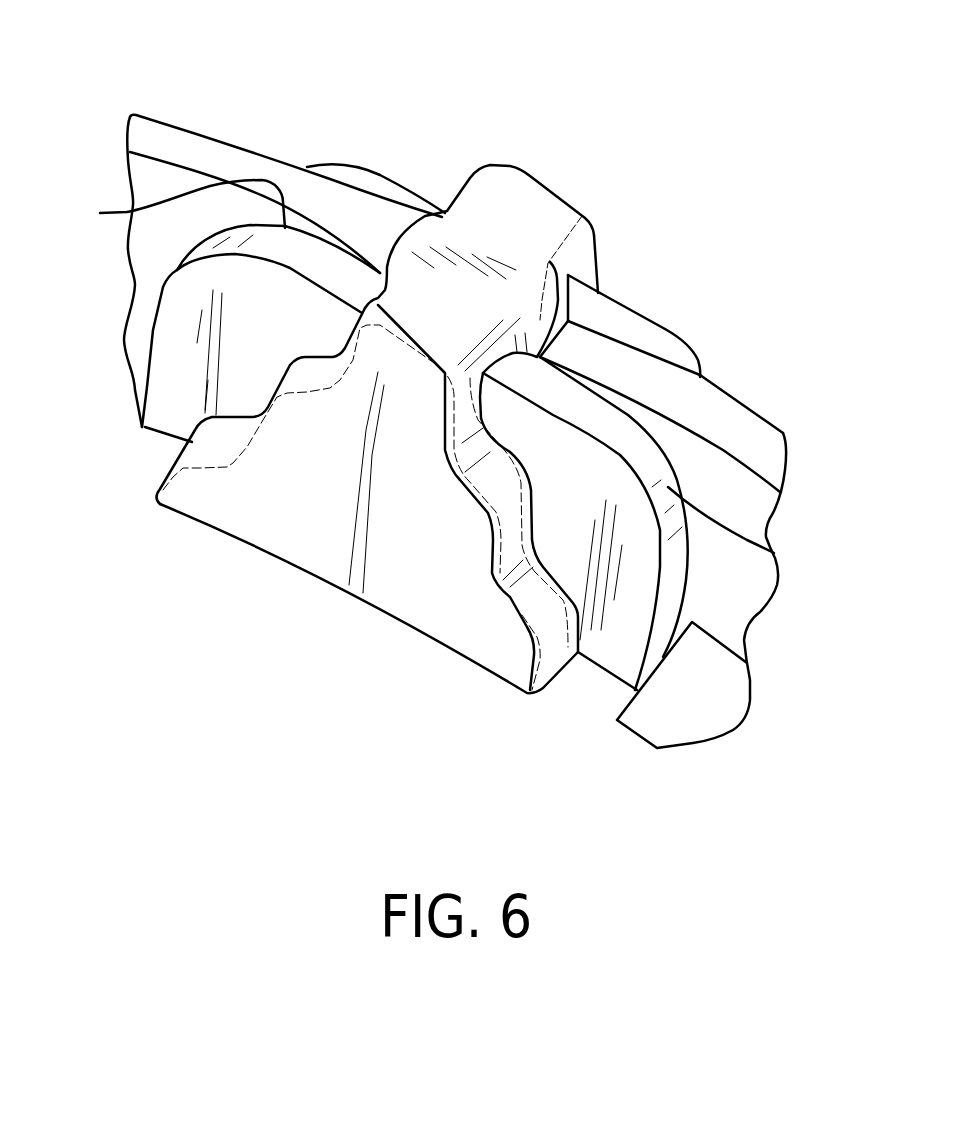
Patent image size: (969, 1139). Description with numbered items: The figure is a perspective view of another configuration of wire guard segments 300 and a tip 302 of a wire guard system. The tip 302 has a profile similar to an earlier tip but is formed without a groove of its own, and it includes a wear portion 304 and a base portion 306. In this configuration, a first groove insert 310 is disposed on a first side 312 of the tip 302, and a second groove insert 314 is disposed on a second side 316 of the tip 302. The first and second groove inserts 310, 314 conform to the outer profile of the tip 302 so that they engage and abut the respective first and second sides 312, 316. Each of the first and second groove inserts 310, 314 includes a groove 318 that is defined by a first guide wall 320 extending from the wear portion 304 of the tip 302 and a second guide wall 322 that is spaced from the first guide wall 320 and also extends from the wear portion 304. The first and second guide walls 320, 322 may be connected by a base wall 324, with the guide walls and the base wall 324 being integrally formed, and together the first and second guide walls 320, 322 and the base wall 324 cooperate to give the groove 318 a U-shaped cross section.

The wire guard segments 300 is at (176, 142).
The tip 302 is at (551, 182).
The wear portion 304 is at (570, 215).
The base portion 306 is at (345, 568).
The first groove insert 310 is at (679, 320).
The first side 312 is at (430, 640).
The second groove insert 314 is at (403, 198).
The second side 316 is at (223, 436).
The groove 318 is at (102, 213).
The first guide wall 320 is at (776, 553).
The second guide wall 322 is at (672, 342).
The base wall 324 is at (600, 293).